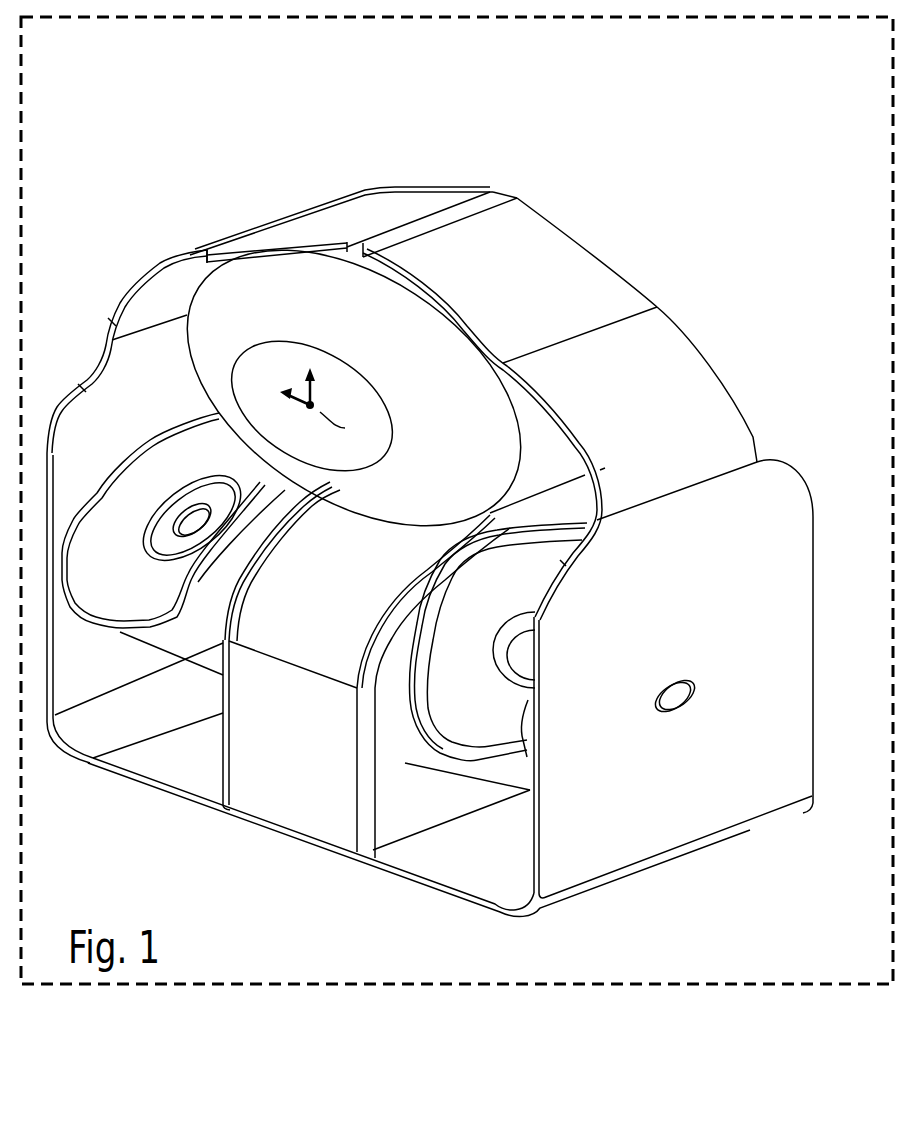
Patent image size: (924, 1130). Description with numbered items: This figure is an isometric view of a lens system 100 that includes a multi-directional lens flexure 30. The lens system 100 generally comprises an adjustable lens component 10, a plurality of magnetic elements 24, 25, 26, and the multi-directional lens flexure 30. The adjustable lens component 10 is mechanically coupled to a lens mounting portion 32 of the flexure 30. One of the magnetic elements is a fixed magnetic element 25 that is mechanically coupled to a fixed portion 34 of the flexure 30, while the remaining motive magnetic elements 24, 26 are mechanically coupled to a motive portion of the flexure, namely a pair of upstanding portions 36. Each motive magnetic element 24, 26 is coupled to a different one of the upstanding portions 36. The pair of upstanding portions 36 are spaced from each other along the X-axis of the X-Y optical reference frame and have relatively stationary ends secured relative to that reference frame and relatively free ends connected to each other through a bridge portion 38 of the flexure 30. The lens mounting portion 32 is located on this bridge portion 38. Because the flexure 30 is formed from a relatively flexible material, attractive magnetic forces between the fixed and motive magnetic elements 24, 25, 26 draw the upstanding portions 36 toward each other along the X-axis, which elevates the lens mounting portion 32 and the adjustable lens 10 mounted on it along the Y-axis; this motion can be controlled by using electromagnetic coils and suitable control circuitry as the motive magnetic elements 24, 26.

The lens system 100 is at (637, 111).
The adjustable lens component 10 is at (517, 480).
The motive magnetic element 24 is at (155, 648).
The fixed magnetic element 25 is at (302, 668).
The motive magnetic element 26 is at (505, 773).
The multi-directional lens flexure 30 is at (165, 389).
The lens mounting portion 32 is at (493, 193).
The fixed portion 34 is at (272, 828).
The upstanding portions 36 is at (54, 455).
The bridge portion 38 is at (714, 365).